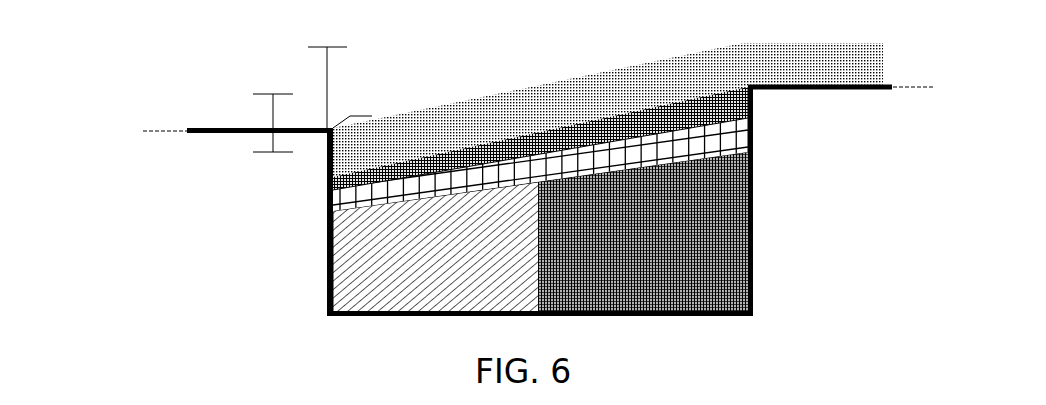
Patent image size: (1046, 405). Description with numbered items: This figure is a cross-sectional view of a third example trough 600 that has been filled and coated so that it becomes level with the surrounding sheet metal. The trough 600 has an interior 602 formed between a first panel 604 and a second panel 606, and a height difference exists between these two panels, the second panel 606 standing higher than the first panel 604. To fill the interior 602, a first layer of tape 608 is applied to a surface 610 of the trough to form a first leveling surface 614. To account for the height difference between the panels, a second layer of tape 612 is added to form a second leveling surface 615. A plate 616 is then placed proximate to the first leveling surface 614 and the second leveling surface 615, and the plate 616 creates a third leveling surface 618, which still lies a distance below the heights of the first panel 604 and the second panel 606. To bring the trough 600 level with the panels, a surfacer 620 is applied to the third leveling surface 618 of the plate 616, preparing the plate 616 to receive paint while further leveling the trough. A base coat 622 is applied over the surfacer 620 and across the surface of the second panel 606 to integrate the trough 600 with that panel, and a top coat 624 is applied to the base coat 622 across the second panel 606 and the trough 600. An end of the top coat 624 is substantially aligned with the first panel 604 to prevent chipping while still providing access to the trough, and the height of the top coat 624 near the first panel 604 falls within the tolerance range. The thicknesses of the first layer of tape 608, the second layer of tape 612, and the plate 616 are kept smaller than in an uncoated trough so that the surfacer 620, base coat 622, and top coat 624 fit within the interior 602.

The third example trough 600 is at (148, 67).
The interior 602 is at (500, 70).
The first panel 604 is at (233, 128).
The second panel 606 is at (852, 83).
The first layer of tape 608 is at (752, 228).
The surface 610 is at (658, 317).
The second layer of tape 612 is at (352, 290).
The first leveling surface 614 is at (753, 163).
The second leveling surface 615 is at (328, 230).
The plate 616 is at (742, 130).
The third leveling surface 618 is at (330, 172).
The surfacer 620 is at (578, 136).
The base coat 622 is at (623, 98).
The top coat 624 is at (685, 62).